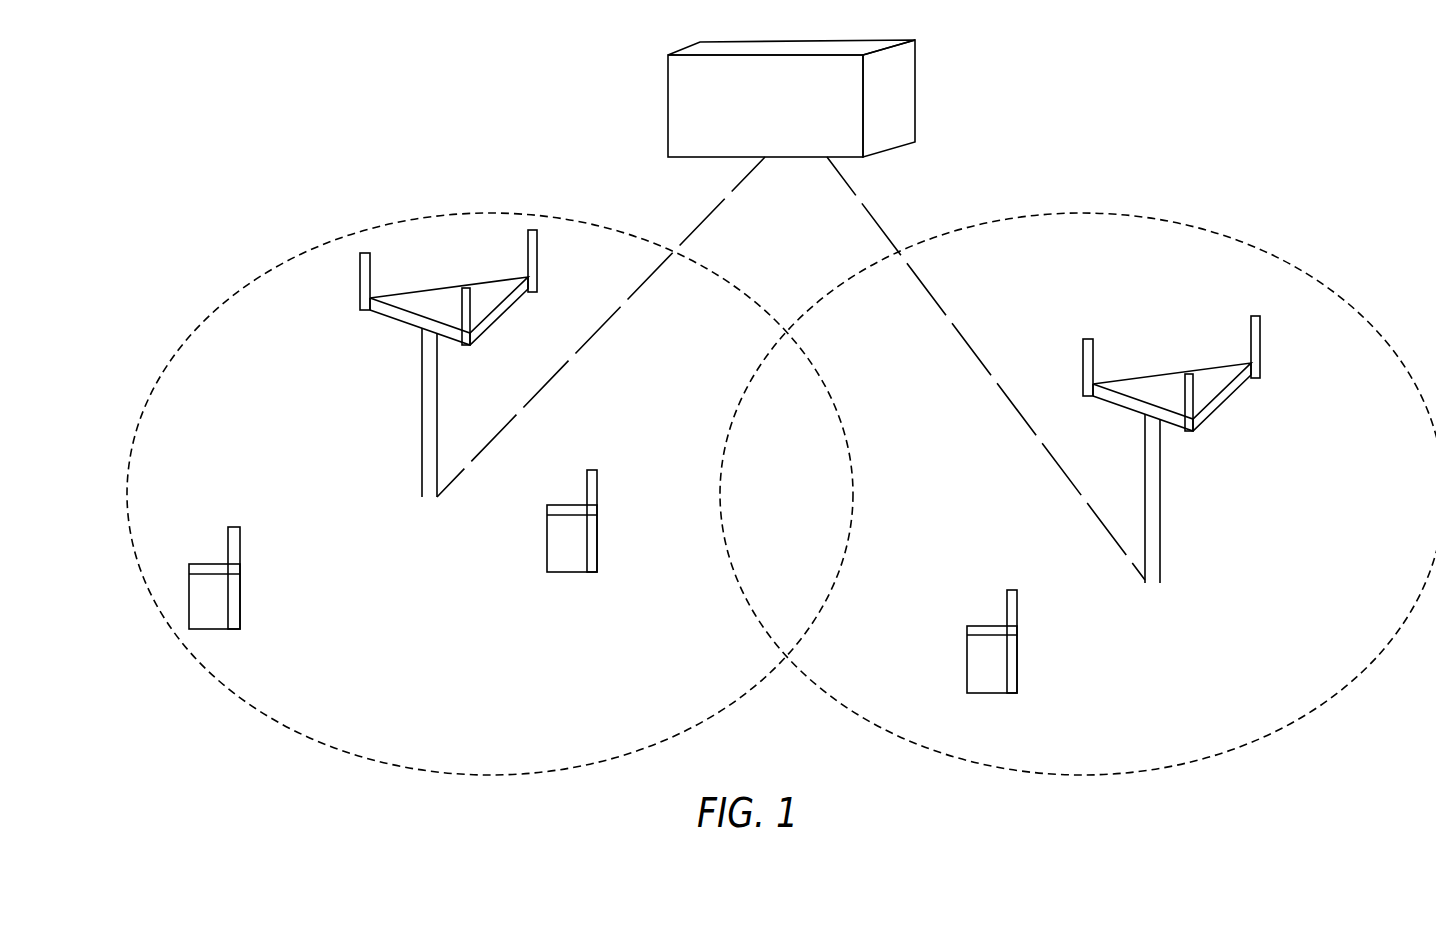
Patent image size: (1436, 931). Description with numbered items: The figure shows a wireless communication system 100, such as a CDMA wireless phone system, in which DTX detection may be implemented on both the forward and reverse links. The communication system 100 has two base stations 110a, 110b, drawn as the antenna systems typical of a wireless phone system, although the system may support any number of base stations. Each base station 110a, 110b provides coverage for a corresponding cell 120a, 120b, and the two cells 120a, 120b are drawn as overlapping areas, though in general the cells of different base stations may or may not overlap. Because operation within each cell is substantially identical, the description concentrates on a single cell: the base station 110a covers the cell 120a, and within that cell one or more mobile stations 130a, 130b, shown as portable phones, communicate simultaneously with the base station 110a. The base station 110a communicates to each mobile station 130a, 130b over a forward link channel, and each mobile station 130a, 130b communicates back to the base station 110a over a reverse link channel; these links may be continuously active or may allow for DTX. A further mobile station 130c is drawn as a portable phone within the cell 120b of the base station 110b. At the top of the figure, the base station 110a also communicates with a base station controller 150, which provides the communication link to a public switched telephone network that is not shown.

The communication system 100 is at (993, 132).
The base station 110a is at (407, 327).
The base station 110b is at (1220, 408).
The cell 120a is at (490, 494).
The cell 120b is at (1078, 494).
The mobile station 130a is at (212, 629).
The mobile station 130b is at (570, 572).
The mobile station 130c is at (985, 693).
The base station controller 150 is at (791, 98).